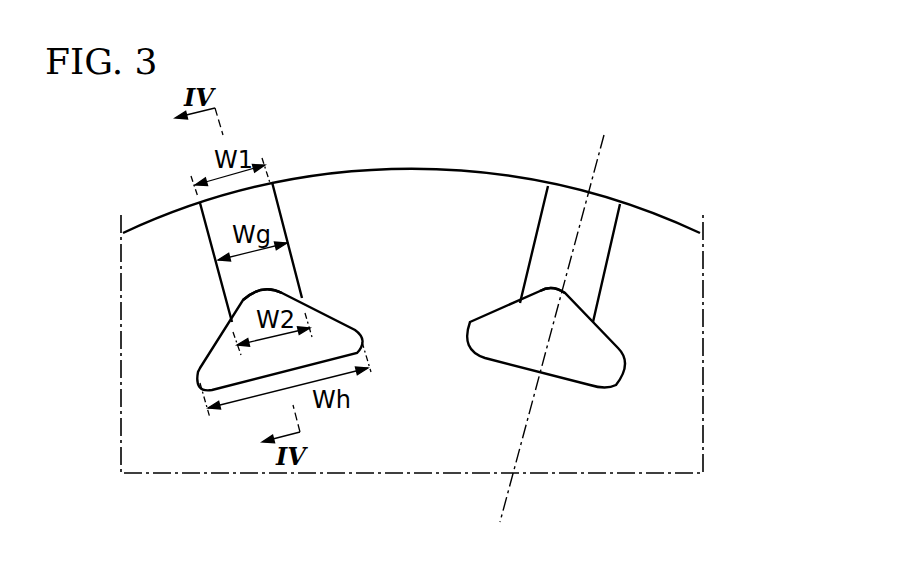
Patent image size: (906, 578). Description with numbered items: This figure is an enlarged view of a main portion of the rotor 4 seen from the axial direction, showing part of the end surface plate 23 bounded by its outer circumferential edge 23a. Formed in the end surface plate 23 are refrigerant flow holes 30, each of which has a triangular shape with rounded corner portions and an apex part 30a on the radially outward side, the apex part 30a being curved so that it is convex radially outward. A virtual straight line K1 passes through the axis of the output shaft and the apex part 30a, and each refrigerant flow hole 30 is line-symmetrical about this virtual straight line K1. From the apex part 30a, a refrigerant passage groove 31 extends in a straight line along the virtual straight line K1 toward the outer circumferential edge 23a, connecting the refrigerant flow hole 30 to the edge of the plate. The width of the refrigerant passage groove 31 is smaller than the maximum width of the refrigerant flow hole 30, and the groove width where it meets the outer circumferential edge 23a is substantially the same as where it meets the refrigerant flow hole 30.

The rotor 4 is at (740, 95).
The end surface plate 23 is at (690, 338).
The outer circumferential edge 23a is at (408, 170).
The refrigerant flow hole 30 is at (266, 370).
The apex part 30a is at (264, 290).
The refrigerant passage groove 31 is at (272, 217).
The virtual straight line K1 is at (603, 158).